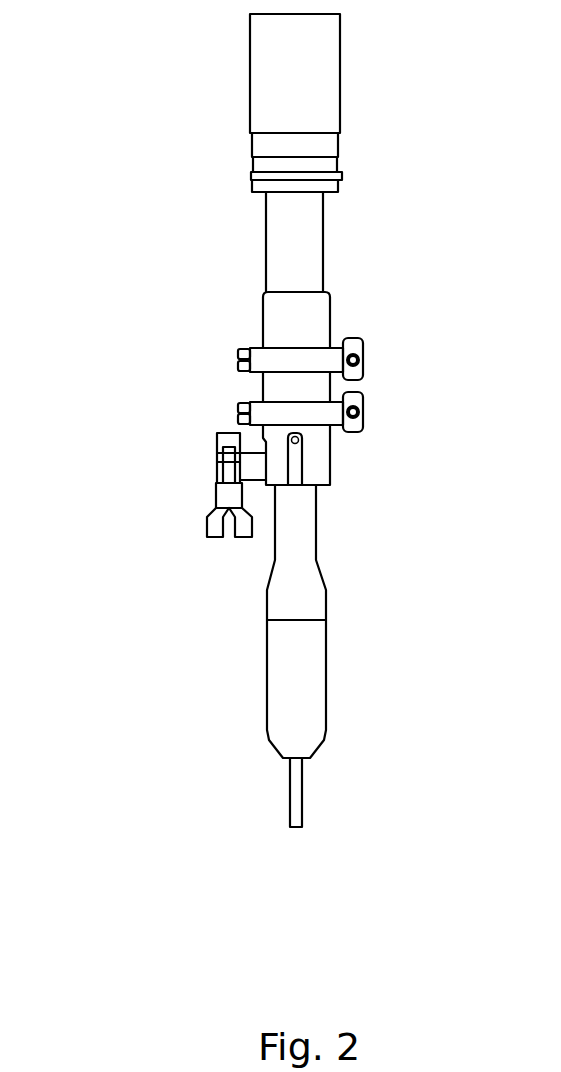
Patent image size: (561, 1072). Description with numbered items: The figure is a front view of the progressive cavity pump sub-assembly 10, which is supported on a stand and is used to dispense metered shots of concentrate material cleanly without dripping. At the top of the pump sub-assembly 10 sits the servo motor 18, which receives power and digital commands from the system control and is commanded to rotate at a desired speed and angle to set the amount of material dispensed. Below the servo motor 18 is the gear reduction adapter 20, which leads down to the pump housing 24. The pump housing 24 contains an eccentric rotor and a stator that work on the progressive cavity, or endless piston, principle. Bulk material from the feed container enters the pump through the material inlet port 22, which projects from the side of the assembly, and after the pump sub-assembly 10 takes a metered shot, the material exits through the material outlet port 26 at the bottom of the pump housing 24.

The progressive cavity pump sub-assembly 10 is at (262, 343).
The servo motor 18 is at (341, 112).
The gear reduction adapter 20 is at (326, 290).
The material inlet port 22 is at (214, 449).
The pump housing 24 is at (328, 626).
The material outlet port 26 is at (304, 798).